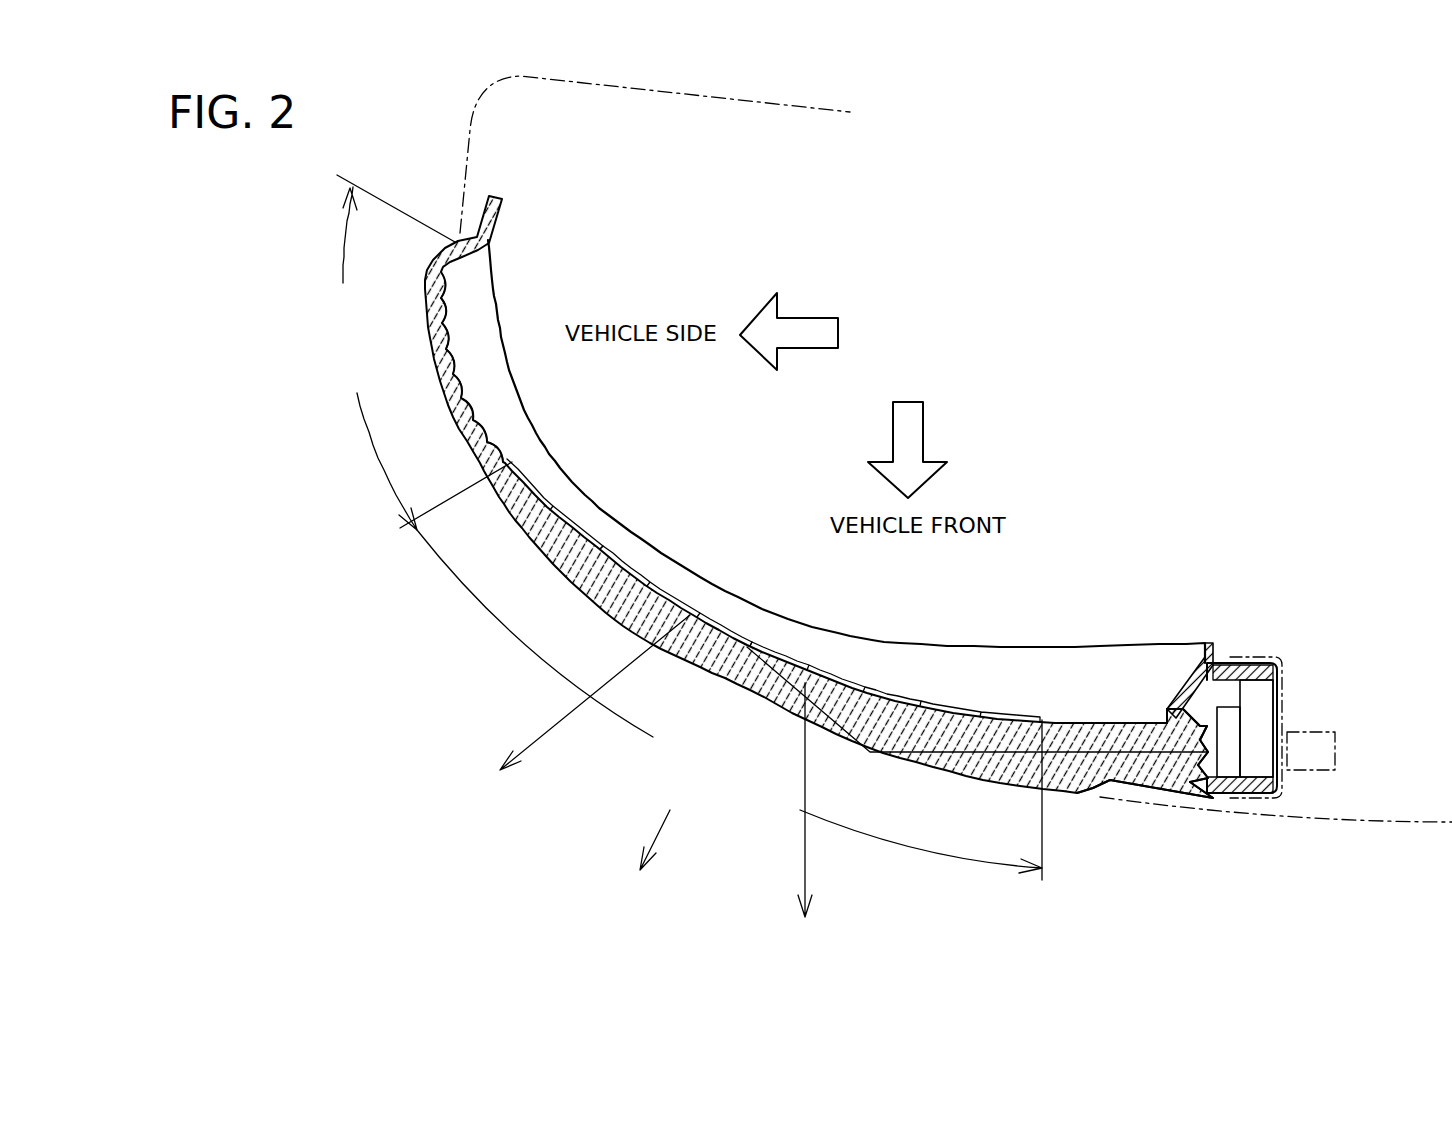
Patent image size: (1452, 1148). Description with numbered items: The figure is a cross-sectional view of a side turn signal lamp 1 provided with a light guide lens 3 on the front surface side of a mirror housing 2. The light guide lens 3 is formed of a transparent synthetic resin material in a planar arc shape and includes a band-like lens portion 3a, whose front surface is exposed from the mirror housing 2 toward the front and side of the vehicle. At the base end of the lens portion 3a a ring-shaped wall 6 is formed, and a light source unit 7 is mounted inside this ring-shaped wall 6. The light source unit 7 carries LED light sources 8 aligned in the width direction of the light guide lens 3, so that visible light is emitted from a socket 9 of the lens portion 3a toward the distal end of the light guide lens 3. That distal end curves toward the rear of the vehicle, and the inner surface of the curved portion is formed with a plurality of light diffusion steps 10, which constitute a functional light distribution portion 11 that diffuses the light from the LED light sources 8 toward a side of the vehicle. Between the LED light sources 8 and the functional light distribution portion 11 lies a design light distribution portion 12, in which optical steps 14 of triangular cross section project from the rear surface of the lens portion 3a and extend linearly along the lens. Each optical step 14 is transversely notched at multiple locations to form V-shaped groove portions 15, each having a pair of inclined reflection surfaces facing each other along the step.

The side turn signal lamp 1 is at (406, 626).
The mirror housing 2 is at (1375, 823).
The light guide lens 3 is at (1080, 794).
The lens portion 3a is at (973, 778).
The ring-shaped wall 6 is at (1247, 667).
The light source unit 7 is at (1263, 703).
The LED light source 8 is at (1213, 793).
The socket 9 is at (1192, 727).
The light diffusion step 10 is at (452, 301).
The functional light distribution portion 11 is at (432, 378).
The design light distribution portion 12 is at (599, 700).
The optical step 14 is at (678, 590).
The groove portion 15 is at (601, 549).